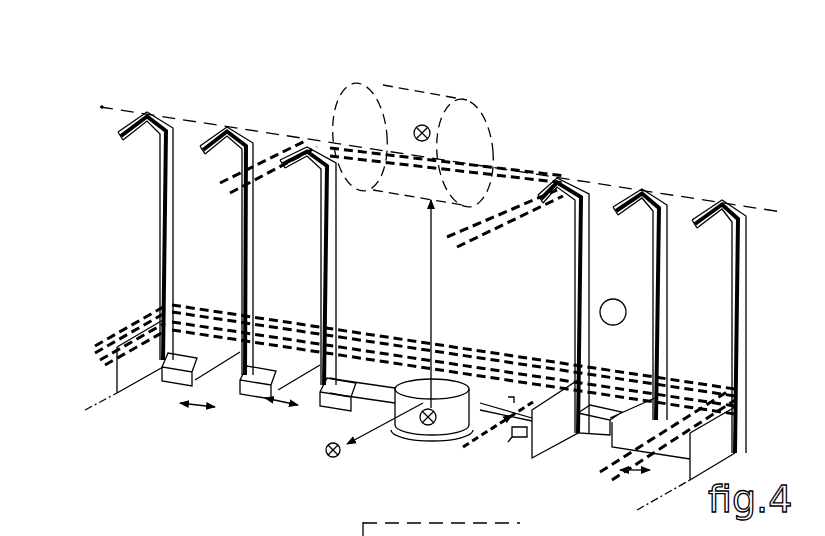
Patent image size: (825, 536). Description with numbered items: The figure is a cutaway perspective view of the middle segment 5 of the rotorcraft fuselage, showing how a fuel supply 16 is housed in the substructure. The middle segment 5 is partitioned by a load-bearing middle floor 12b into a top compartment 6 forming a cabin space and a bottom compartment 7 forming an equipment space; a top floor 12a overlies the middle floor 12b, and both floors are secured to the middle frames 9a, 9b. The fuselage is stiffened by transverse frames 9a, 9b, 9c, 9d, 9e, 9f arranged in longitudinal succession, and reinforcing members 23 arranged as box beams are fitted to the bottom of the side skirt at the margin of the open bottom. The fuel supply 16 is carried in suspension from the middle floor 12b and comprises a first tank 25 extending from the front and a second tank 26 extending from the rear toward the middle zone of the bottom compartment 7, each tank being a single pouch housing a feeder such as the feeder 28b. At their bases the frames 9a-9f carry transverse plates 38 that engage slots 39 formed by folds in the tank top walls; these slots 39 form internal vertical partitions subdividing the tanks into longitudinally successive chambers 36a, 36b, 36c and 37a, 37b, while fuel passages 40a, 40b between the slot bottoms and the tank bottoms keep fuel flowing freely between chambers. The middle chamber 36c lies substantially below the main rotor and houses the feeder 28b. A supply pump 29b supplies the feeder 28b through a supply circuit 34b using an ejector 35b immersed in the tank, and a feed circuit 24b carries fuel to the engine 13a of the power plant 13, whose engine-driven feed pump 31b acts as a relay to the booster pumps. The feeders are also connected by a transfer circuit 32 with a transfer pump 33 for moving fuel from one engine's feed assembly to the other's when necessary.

The middle segment 5 is at (600, 154).
The top compartment 6 is at (613, 312).
The bottom compartment 7 is at (638, 483).
The transverse frame 9a is at (321, 220).
The transverse frame 9b is at (575, 284).
The transverse frame 9c is at (159, 216).
The transverse frame 9d is at (242, 212).
The transverse frame 9e is at (653, 237).
The transverse frame 9f is at (733, 302).
The top floor 12a is at (517, 170).
The middle floor 12b is at (522, 356).
The power plant 13 is at (330, 108).
The engine 13a is at (493, 127).
The fuel supply 16 is at (228, 423).
The reinforcing member 23 is at (514, 397).
The feed circuit 24b is at (430, 272).
The first tank 25 is at (357, 348).
The second tank 26 is at (686, 398).
The feeder 28b is at (460, 370).
The supply pump 29b is at (433, 433).
The feed pump 31b is at (421, 131).
The transfer circuit 32 is at (381, 428).
The transfer pump 33 is at (326, 451).
The supply circuit 34b is at (477, 433).
The ejector 35b is at (517, 442).
The chamber 36a is at (198, 373).
The chamber 36b is at (273, 386).
The middle chamber 36c is at (357, 400).
The chamber 37a is at (617, 452).
The chamber 37b is at (539, 421).
The transverse plate 38 is at (430, 393).
The slot 39 is at (180, 397).
The fuel passage 40a is at (257, 412).
The fuel passage 40b is at (653, 470).